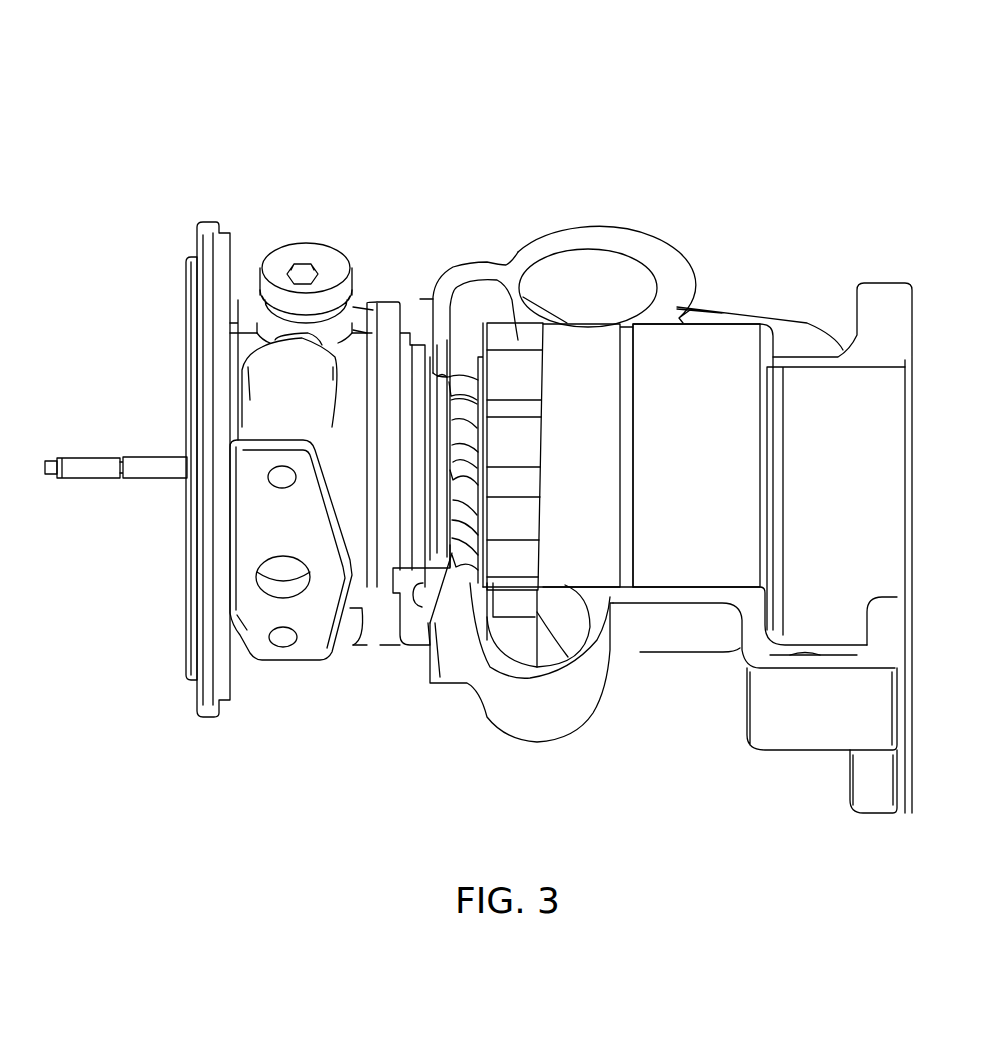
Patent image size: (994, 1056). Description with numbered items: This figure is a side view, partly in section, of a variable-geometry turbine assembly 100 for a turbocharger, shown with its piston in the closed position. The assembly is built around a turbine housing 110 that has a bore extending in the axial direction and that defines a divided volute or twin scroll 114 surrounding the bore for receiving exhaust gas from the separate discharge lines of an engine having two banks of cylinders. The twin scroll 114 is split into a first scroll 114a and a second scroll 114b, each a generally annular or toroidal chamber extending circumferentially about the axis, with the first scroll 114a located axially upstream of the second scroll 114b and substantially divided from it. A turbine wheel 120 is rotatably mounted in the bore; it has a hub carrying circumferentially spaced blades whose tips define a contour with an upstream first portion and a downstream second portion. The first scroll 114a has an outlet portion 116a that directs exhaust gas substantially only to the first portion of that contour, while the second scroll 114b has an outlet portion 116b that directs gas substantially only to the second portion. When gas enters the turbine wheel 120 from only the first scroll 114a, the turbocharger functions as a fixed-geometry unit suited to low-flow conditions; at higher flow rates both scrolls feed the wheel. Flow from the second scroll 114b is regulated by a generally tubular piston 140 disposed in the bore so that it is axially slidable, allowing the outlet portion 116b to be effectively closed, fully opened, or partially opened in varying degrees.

The variable-geometry turbine assembly 100 is at (418, 168).
The turbine housing 110 is at (720, 313).
The divided volute or twin scroll 114 is at (521, 245).
The first scroll 114a is at (472, 310).
The second scroll 114b is at (594, 267).
The outlet portion of the first scroll 116a is at (465, 590).
The outlet portion of the second scroll 116b is at (521, 586).
The turbine wheel 120 is at (458, 565).
The tubular piston 140 is at (729, 473).